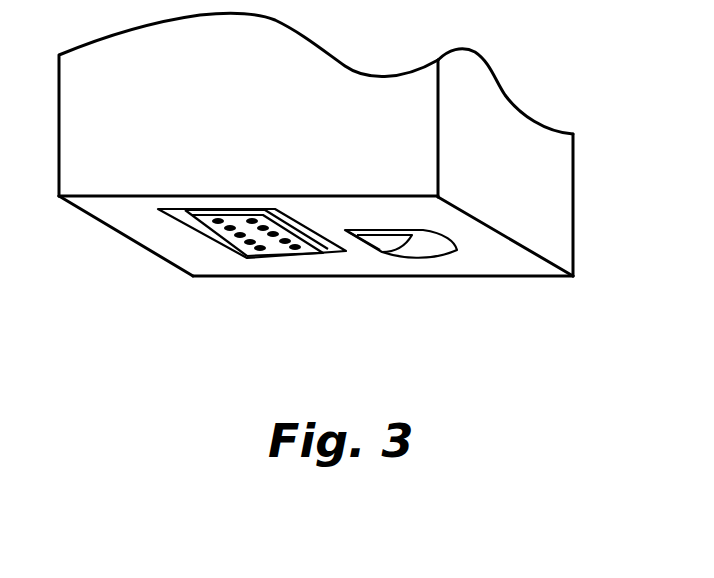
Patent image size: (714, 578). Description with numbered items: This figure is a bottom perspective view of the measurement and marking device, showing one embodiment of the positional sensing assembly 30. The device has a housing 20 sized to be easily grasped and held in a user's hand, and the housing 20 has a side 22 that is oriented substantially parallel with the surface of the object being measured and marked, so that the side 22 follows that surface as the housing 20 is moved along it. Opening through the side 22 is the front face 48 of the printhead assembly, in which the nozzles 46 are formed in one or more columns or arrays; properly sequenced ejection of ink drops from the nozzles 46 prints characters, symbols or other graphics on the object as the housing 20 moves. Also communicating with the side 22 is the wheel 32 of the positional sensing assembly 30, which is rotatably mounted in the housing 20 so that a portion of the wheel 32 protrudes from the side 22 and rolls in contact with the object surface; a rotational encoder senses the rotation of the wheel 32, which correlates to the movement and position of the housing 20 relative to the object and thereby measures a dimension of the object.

The housing 20 is at (573, 217).
The side 22 is at (487, 250).
The positional sensing assembly 30 is at (440, 350).
The wheel 32 is at (407, 250).
The nozzles 46 is at (293, 247).
The front face 48 is at (277, 247).